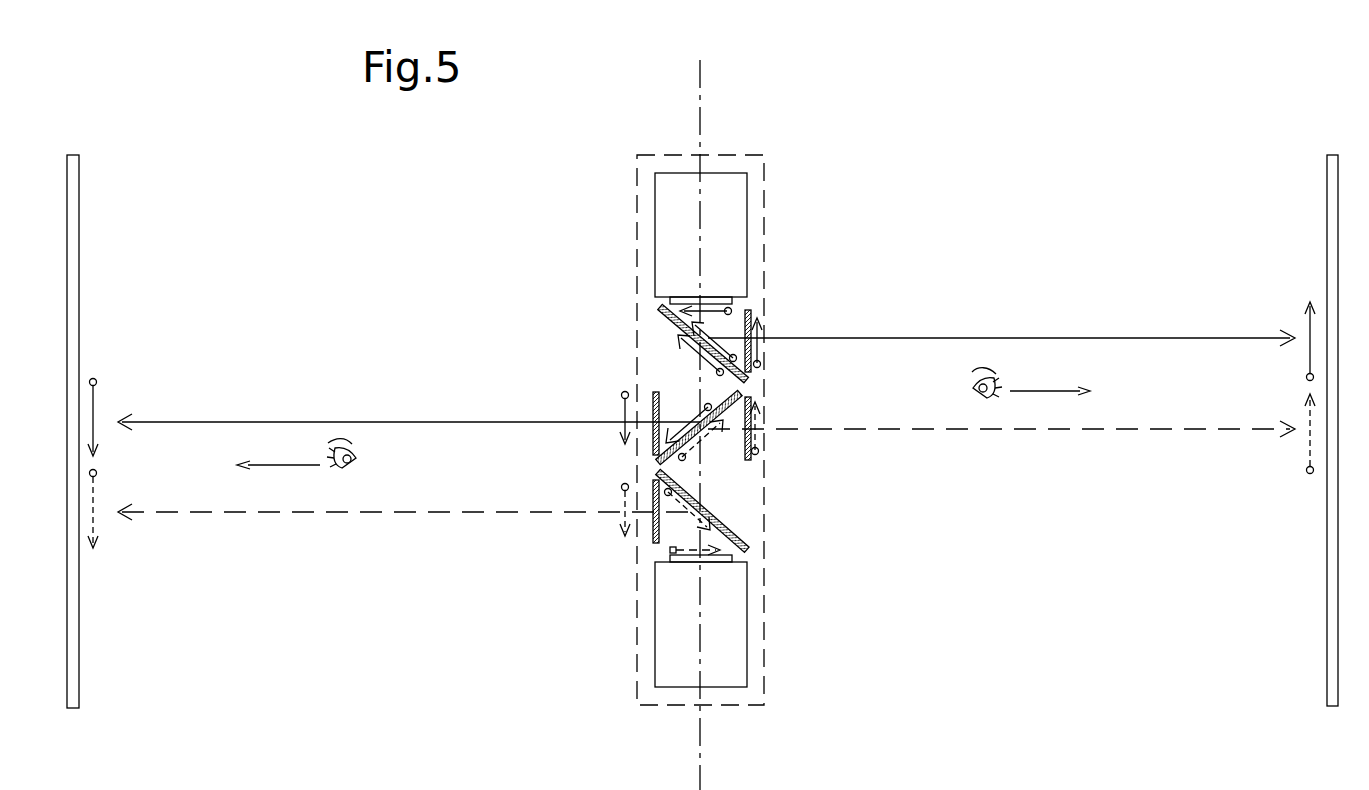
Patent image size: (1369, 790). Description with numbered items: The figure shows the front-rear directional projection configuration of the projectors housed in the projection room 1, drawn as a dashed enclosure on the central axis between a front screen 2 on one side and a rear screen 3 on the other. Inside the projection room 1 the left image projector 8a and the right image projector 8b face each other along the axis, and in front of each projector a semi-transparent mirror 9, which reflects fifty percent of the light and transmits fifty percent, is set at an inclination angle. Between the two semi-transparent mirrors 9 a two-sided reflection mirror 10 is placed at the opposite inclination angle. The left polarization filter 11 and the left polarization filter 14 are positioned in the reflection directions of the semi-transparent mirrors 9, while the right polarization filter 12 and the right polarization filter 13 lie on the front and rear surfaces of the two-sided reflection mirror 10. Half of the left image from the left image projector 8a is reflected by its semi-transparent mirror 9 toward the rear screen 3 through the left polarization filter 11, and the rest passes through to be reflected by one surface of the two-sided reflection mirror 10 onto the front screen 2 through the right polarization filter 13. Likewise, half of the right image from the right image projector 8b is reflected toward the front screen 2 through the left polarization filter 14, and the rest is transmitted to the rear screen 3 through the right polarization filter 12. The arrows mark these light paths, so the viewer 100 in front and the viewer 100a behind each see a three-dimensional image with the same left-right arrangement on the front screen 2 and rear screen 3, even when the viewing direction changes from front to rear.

The projection room 1 is at (745, 152).
The front screen 2 is at (80, 630).
The rear screen 3 is at (1325, 632).
The left image projector 8a is at (740, 196).
The right image projector 8b is at (742, 613).
The semi-transparent mirror 9 is at (655, 305).
The two-sided reflection mirror 10 is at (750, 385).
The left polarization filter 11 is at (750, 305).
The right polarization filter 12 is at (752, 463).
The right polarization filter 13 is at (653, 392).
The left polarization filter 14 is at (653, 543).
The viewer 100 is at (338, 440).
The viewer 100a is at (978, 368).